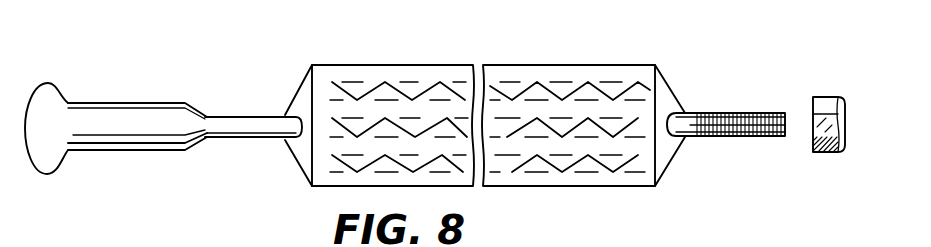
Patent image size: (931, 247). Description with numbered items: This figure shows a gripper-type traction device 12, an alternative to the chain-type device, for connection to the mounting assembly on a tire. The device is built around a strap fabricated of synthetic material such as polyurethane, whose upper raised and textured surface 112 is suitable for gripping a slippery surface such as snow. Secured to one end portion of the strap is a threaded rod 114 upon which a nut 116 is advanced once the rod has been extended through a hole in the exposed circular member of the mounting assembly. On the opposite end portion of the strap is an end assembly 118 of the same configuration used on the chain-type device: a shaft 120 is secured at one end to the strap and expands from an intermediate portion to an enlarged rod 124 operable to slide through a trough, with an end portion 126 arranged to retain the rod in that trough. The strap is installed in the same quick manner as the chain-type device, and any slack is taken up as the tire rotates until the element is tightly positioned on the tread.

The gripper-type traction device 12 is at (481, 51).
The upper raised and textured surface 112 is at (587, 183).
The threaded rod 114 is at (727, 136).
The nut 116 is at (837, 97).
The end assembly 118 is at (123, 160).
The shaft 120 is at (245, 139).
The enlarged rod 124 is at (140, 103).
The end portion 126 is at (56, 84).